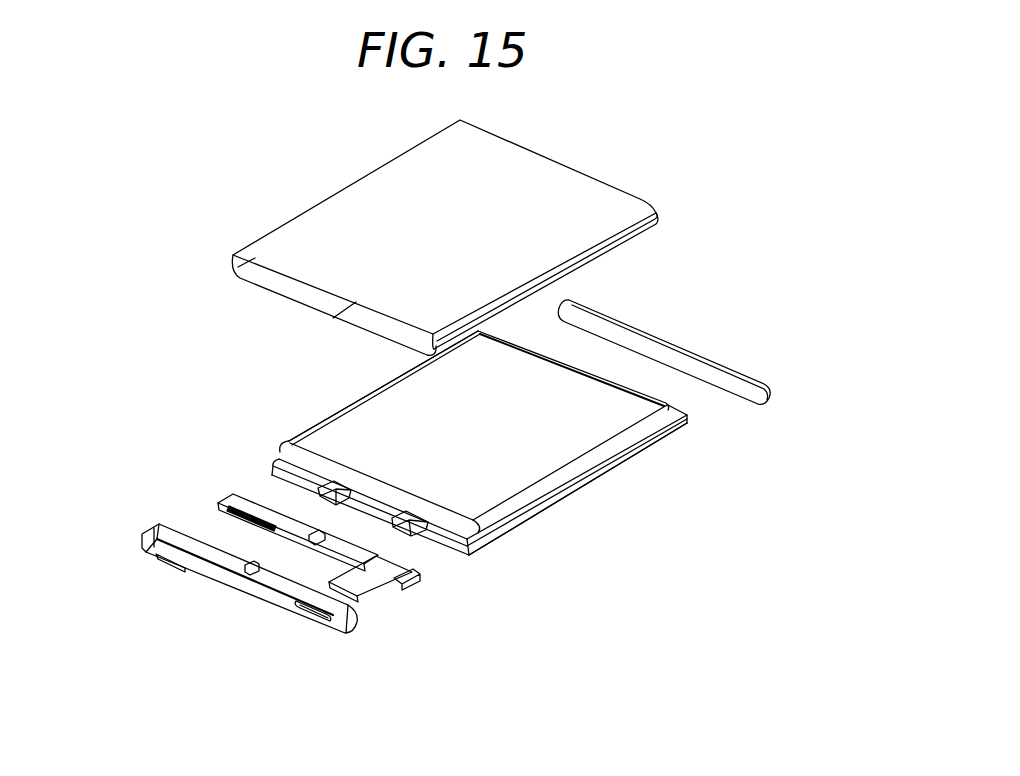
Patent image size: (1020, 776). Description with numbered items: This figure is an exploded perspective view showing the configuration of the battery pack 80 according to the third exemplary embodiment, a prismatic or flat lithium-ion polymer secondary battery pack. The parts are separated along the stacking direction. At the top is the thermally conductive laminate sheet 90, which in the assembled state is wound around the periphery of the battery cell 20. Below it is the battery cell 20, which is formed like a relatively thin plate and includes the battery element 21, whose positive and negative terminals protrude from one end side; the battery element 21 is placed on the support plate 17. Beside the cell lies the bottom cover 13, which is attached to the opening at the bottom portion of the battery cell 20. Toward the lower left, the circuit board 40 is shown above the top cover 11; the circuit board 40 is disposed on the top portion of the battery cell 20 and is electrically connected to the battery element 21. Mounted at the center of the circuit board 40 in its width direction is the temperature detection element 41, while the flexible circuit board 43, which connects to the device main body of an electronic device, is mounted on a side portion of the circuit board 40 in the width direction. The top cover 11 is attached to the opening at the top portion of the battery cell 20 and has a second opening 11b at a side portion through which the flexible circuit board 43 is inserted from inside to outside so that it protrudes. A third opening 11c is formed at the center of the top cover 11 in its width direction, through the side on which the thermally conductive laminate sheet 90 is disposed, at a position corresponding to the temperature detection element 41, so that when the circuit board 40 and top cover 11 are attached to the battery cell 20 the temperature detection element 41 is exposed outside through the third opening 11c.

The thermally conductive laminate sheet 90 is at (388, 150).
The bottom cover 13 is at (673, 343).
The battery cell 20 is at (360, 390).
The battery element 21 is at (325, 441).
The support plate 17 is at (630, 455).
The circuit board 40 is at (268, 509).
The temperature detection element 41 is at (311, 535).
The flexible circuit board 43 is at (375, 578).
The top cover 11 is at (228, 593).
The second opening 11b is at (304, 618).
The third opening 11c is at (250, 573).
The battery pack 80 is at (652, 612).